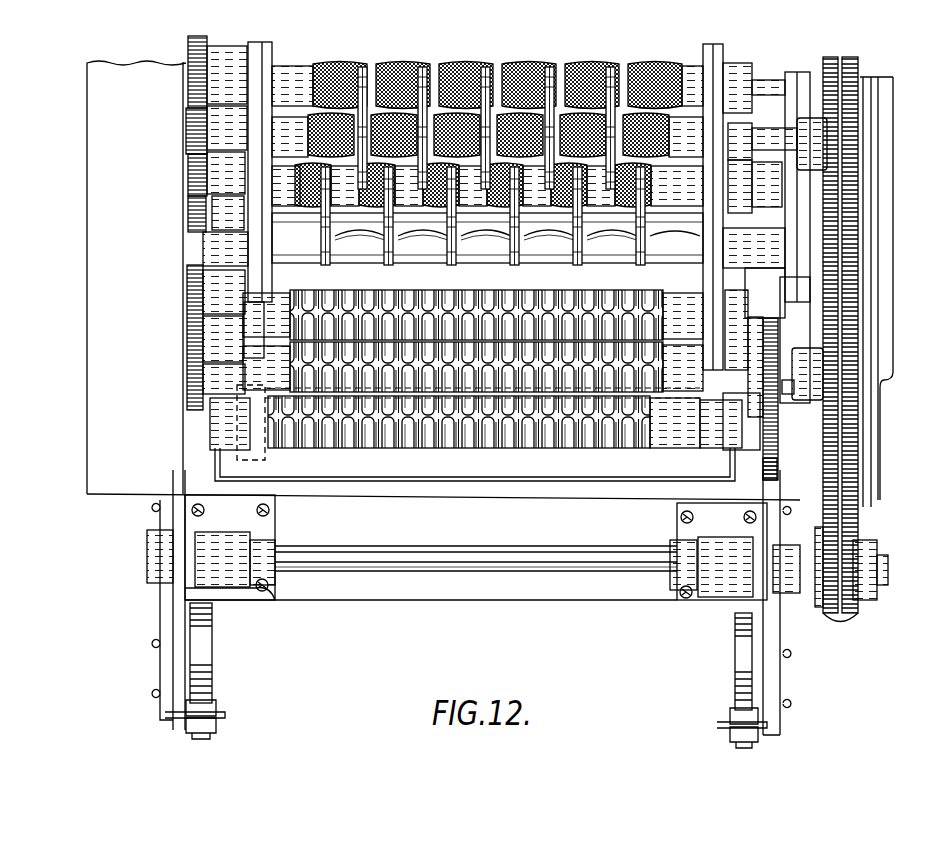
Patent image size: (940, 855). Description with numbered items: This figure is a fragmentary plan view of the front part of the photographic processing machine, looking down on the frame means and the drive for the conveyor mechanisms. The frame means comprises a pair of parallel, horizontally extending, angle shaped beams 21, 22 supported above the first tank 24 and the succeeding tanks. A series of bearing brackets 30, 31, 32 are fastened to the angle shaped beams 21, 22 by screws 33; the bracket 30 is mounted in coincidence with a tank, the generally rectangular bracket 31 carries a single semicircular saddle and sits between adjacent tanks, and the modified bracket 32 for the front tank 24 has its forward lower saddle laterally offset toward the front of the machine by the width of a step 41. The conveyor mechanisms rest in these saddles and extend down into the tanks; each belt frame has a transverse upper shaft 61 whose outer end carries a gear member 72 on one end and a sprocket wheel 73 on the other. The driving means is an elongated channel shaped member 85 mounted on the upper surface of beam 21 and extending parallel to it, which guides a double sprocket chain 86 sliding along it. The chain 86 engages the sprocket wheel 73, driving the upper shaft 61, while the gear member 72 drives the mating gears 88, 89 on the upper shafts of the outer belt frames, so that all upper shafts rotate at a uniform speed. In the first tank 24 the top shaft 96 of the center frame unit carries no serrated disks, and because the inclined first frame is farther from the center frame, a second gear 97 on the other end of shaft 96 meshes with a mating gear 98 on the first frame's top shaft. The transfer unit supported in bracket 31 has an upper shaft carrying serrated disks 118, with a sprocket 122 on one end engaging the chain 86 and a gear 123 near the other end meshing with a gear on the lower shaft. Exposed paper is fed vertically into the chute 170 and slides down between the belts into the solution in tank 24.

The angle shaped beam 21 is at (884, 382).
The angle shaped beam 22 is at (97, 340).
The tank 24 is at (541, 478).
The bearing bracket 30 is at (232, 62).
The bearing bracket 31 is at (190, 251).
The bearing bracket 32 is at (735, 300).
The screw 33 is at (460, 347).
The step 41 is at (222, 406).
The upper shaft 61 is at (188, 132).
The gear member 72 is at (190, 152).
The sprocket wheel 73 is at (805, 120).
The channel shaped member 85 is at (866, 360).
The double sprocket chain 86 is at (856, 525).
The mating gear 88 is at (189, 72).
The mating gear 89 is at (190, 210).
The top shaft 96 is at (786, 387).
The second gear 97 is at (782, 330).
The mating gear 98 is at (766, 479).
The serrated disk 118 is at (576, 242).
The sprocket 122 is at (858, 243).
The gear 123 is at (320, 245).
The chute 170 is at (246, 446).